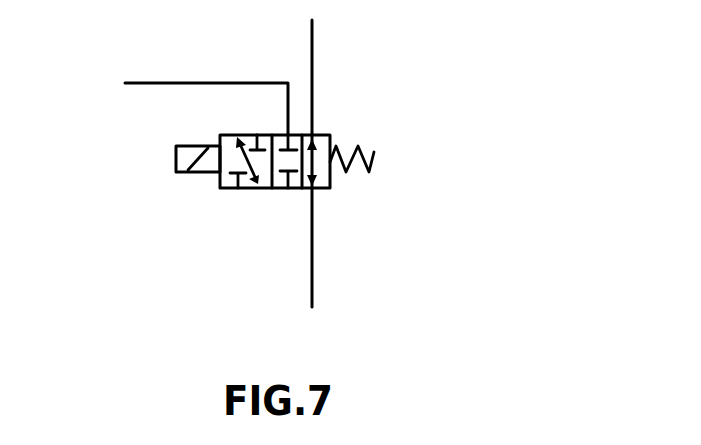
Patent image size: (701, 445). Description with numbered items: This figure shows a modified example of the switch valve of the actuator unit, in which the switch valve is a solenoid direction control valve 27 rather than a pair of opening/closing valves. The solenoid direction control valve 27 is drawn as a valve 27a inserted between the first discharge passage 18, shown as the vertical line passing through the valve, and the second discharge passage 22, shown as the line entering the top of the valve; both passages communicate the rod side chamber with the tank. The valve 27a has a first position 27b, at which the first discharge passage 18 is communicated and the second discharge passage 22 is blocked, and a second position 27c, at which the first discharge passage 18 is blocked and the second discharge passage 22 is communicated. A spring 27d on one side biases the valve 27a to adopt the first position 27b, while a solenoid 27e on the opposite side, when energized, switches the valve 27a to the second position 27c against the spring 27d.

The first discharge passage 18 is at (312, 57).
The second discharge passage 22 is at (206, 82).
The solenoid direction control valve 27 is at (199, 196).
The valve 27a is at (221, 134).
The first position 27b is at (318, 192).
The second position 27c is at (231, 190).
The spring 27d is at (374, 150).
The solenoid 27e is at (175, 158).